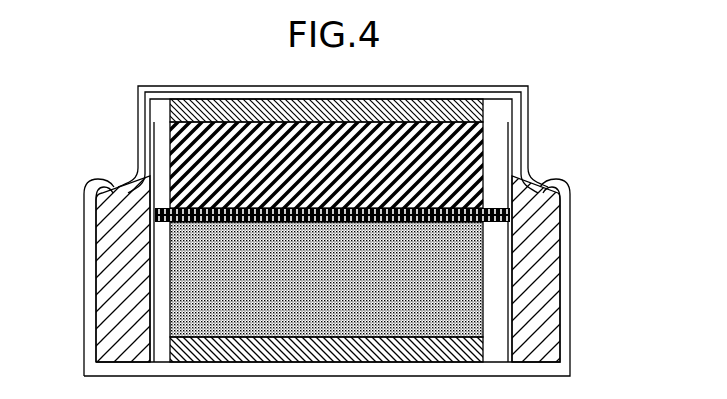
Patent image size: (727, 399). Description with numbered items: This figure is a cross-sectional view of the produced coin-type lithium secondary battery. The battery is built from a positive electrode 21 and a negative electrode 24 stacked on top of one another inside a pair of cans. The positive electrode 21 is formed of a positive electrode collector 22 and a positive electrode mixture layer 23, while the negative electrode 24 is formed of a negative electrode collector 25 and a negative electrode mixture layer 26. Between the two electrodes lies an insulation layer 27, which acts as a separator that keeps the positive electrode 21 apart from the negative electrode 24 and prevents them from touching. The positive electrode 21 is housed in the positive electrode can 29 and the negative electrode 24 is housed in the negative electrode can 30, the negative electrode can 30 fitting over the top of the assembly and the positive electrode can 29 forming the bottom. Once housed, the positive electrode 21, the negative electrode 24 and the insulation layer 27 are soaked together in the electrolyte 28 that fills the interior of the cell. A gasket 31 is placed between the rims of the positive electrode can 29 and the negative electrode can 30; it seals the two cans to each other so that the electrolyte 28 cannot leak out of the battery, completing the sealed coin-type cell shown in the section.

The positive electrode 21 is at (429, 292).
The positive electrode collector 22 is at (455, 351).
The positive electrode mixture layer 23 is at (470, 312).
The negative electrode 24 is at (431, 148).
The negative electrode collector 25 is at (470, 108).
The negative electrode mixture layer 26 is at (465, 146).
The insulation layer 27 is at (507, 216).
The electrolyte 28 is at (163, 270).
The positive electrode can 29 is at (92, 368).
The negative electrode can 30 is at (143, 117).
The gasket 31 is at (117, 213).